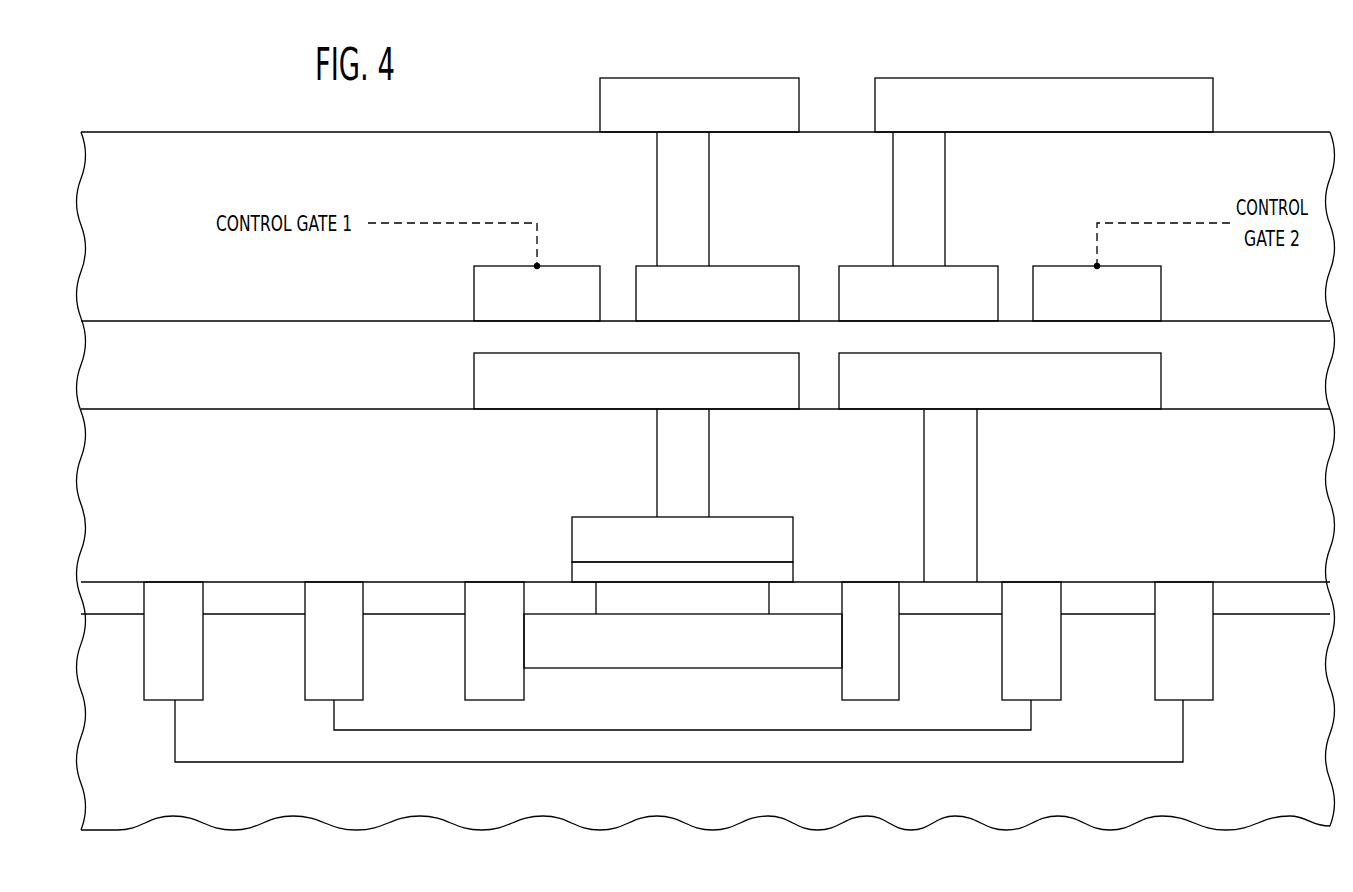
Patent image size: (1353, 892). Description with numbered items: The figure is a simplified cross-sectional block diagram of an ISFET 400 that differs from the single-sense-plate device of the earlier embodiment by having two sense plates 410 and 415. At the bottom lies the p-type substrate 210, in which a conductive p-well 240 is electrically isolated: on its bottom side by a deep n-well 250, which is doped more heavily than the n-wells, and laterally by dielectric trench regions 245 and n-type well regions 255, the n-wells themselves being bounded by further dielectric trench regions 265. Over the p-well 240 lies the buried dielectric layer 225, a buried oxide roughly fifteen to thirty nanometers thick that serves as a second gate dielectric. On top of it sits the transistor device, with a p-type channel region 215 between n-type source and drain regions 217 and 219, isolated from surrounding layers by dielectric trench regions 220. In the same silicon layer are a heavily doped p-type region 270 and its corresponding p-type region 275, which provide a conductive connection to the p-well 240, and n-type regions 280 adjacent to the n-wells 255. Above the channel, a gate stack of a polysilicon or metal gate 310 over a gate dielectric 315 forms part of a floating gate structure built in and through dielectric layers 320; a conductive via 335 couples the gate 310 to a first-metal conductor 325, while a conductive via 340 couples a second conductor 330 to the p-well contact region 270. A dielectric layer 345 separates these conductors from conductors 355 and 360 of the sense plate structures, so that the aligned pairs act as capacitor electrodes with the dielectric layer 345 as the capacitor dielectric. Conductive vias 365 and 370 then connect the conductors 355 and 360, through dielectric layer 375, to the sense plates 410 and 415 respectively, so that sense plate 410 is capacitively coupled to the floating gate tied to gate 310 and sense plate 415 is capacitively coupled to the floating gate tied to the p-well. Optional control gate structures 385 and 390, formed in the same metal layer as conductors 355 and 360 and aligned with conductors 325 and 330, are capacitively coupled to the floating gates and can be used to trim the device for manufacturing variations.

The substrate 210 is at (1241, 795).
The channel region 215 is at (635, 605).
The source region 217 is at (543, 591).
The drain region 219 is at (803, 605).
The dielectric trench regions 220 is at (478, 662).
The buried dielectric layer 225 is at (704, 655).
The p-well 240 is at (669, 715).
The dielectric trench regions 245 is at (318, 662).
The deep n-well 250 is at (938, 750).
The n-type well regions 255 is at (234, 677).
The dielectric trench regions 265 is at (157, 662).
The p-type region 270 is at (952, 607).
The p-type region 275 is at (413, 591).
The n-type regions 280 is at (250, 591).
The gate 310 is at (662, 552).
The gate dielectric 315 is at (785, 573).
The dielectric layers 320 is at (121, 502).
The conductor 325 is at (612, 392).
The conductor 330 is at (984, 392).
The conductive via 335 is at (709, 458).
The conductive via 340 is at (977, 458).
The dielectric layer 345 is at (126, 370).
The conductor 355 is at (701, 305).
The conductor 360 is at (901, 305).
The conductive via 365 is at (709, 183).
The conductive via 370 is at (945, 183).
The dielectric layer 375 is at (126, 228).
The control gate structure 385 is at (521, 305).
The control gate structure 390 is at (1081, 305).
The ISFET 400 is at (936, 36).
The sense plate 410 is at (689, 115).
The sense plate 415 is at (1022, 115).